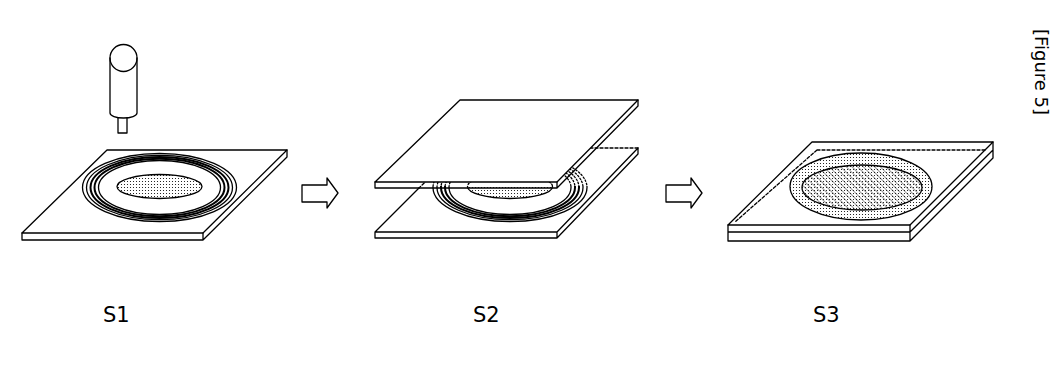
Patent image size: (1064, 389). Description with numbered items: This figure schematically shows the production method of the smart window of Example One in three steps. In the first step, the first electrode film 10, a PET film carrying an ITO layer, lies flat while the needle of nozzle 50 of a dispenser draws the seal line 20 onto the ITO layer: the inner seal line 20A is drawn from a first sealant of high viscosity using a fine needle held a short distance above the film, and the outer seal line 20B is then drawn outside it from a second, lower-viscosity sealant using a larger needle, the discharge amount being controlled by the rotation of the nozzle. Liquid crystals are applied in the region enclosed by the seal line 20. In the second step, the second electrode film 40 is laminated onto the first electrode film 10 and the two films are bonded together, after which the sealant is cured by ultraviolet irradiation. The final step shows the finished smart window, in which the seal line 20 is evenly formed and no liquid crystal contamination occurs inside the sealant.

The first electrode film 10 is at (247, 160).
The seal line 20 is at (906, 168).
The inner seal line 20A is at (152, 217).
The outer seal line 20B is at (110, 217).
The second electrode film 40 is at (555, 115).
The needle of nozzle 50 is at (118, 90).